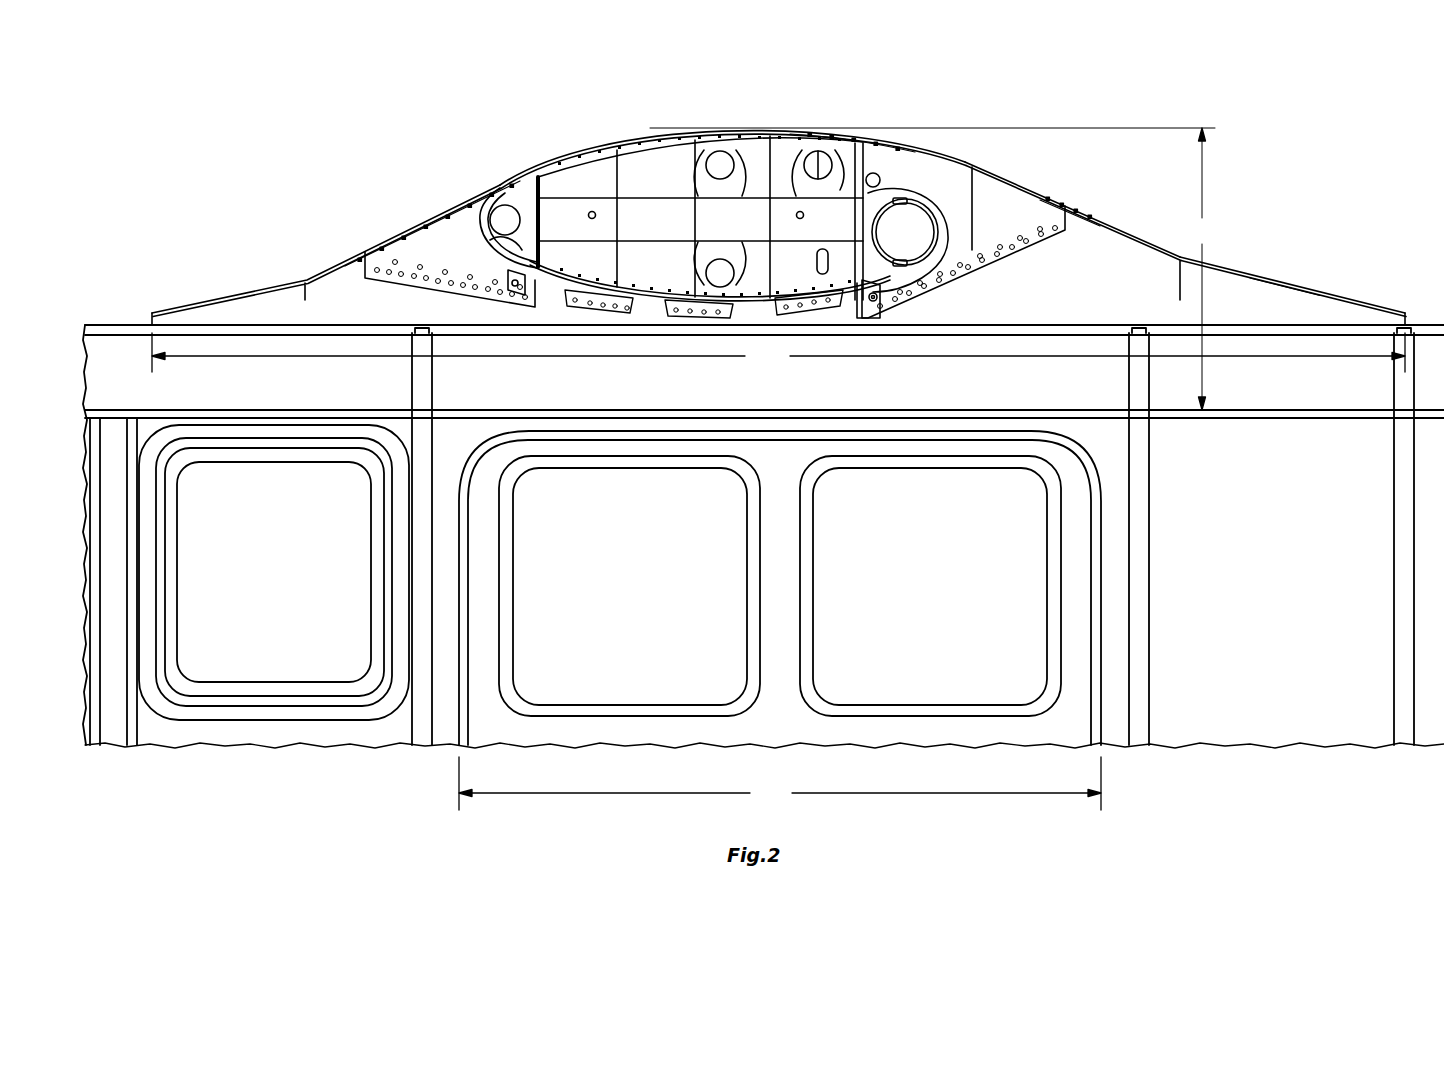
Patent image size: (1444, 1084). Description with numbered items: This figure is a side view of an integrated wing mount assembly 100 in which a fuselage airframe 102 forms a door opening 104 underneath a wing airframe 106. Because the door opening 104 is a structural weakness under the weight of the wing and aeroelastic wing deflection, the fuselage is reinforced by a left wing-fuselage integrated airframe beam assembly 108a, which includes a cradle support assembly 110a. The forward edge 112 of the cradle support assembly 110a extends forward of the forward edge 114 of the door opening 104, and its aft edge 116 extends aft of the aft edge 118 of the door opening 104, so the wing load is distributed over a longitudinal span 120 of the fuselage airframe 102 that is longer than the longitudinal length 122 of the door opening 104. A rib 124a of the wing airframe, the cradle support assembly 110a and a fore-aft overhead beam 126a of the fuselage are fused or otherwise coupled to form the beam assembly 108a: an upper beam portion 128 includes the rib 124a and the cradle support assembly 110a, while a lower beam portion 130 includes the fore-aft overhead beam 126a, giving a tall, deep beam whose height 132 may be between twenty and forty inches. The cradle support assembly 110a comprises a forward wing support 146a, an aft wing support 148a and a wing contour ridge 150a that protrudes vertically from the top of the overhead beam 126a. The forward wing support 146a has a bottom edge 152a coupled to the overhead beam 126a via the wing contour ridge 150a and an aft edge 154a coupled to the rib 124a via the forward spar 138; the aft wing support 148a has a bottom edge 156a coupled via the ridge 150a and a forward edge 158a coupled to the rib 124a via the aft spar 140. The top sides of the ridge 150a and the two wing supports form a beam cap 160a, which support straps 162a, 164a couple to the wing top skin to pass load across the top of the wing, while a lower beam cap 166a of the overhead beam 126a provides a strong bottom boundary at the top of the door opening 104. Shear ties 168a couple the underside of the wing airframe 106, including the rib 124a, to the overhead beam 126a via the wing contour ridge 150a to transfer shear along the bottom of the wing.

The integrated wing mount assembly 100 is at (348, 185).
The fuselage airframe 102 is at (1152, 461).
The door opening 104 is at (1107, 581).
The wing airframe 106 is at (617, 147).
The left wing-fuselage integrated airframe beam assembly 108a is at (1142, 235).
The cradle support assembly 110a is at (1247, 270).
The forward edge 112 is at (152, 313).
The forward edge 114 is at (457, 580).
The aft edge 116 is at (1405, 313).
The aft edge 118 is at (1105, 651).
The longitudinal span 120 is at (778, 352).
The longitudinal length 122 is at (780, 783).
The rib 124a is at (657, 168).
The fore-aft overhead beam 126a is at (650, 395).
The upper beam portion 128 is at (222, 297).
The lower beam portion 130 is at (764, 414).
The height 132 is at (938, 269).
The forward spar 138 is at (548, 215).
The aft spar 140 is at (850, 223).
The forward wing support 146a is at (420, 243).
The aft wing support 148a is at (940, 173).
The wing contour ridge 150a is at (962, 310).
The bottom edge 152a is at (423, 290).
The aft edge 154a is at (516, 190).
The bottom edge 156a is at (950, 285).
The forward edge 158a is at (873, 180).
The beam cap 160a is at (1302, 285).
The support strap 162a is at (548, 168).
The support strap 164a is at (852, 137).
The lower beam cap 166a is at (233, 407).
The shear tie 168a is at (592, 307).